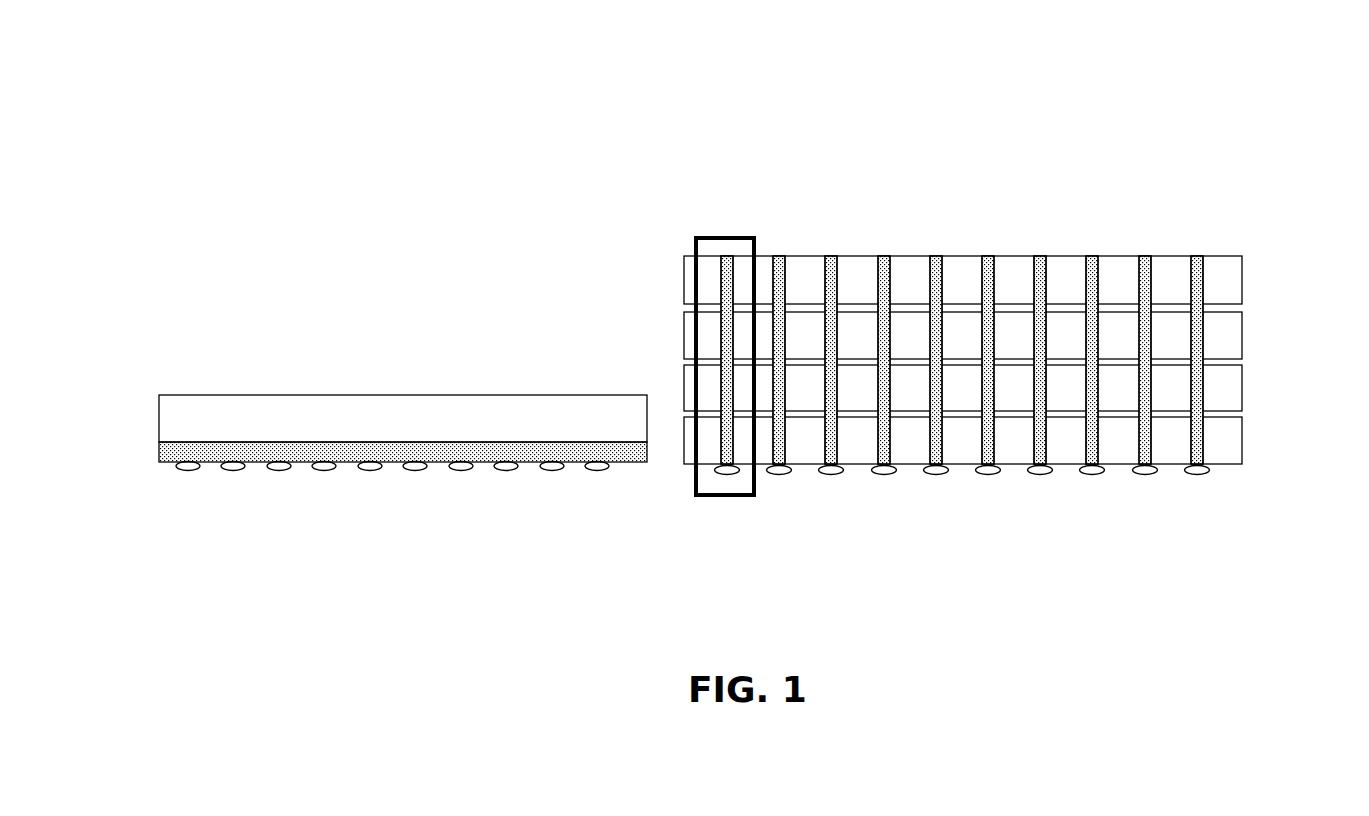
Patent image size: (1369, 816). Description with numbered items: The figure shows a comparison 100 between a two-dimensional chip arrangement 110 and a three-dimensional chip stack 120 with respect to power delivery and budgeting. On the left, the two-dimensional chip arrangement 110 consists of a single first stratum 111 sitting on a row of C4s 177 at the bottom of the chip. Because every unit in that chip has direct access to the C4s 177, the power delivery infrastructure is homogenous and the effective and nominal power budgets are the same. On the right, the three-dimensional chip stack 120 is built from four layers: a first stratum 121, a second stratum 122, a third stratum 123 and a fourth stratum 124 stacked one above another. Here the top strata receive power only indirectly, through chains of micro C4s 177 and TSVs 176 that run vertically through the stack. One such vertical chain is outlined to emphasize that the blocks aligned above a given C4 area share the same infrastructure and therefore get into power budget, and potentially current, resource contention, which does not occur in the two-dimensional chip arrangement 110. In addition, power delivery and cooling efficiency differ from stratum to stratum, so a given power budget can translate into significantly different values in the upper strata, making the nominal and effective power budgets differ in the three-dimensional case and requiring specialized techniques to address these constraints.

The comparison 100 is at (690, 73).
The two-dimensional (2D) chip arrangement 110 is at (338, 328).
The stratum-1 111 is at (150, 415).
The three-dimensional (3D) chip stack 120 is at (968, 106).
The stratum-1 121 is at (1250, 441).
The stratum-2 122 is at (1250, 388).
The stratum-3 123 is at (1250, 335).
The stratum-4 124 is at (1250, 281).
The TSV 176 is at (831, 256).
The C4 177 is at (278, 470).